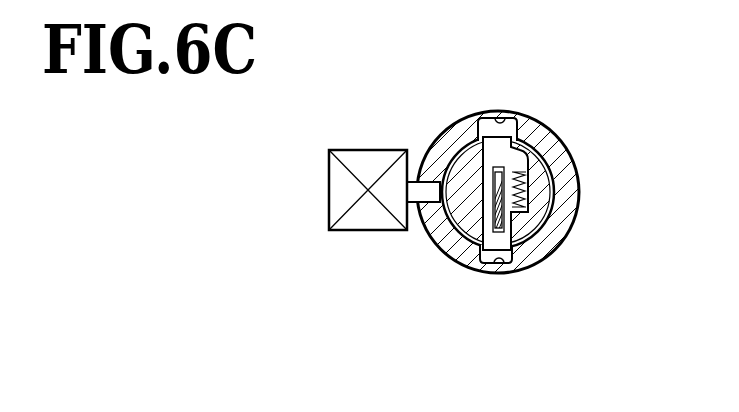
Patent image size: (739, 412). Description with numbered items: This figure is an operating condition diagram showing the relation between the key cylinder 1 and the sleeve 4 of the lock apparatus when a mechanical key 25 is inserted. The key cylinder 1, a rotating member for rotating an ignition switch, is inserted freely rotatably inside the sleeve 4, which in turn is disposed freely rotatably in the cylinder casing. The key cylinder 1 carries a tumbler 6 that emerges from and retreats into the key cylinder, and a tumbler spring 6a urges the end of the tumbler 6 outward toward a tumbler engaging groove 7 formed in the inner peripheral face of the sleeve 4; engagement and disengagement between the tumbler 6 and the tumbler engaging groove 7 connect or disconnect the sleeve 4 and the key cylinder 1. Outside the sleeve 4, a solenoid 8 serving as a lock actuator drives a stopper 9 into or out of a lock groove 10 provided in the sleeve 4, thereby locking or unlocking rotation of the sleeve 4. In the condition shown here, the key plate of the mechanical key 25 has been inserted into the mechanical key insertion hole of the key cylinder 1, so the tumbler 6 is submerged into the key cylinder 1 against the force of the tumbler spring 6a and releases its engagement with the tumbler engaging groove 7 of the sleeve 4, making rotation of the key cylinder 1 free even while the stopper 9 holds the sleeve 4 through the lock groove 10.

The key cylinder 1 is at (455, 232).
The sleeve 4 is at (571, 151).
The tumbler 6 is at (520, 246).
The tumbler spring 6a is at (530, 203).
The tumbler engaging groove 7 is at (507, 119).
The solenoid 8 is at (328, 192).
The stopper 9 is at (418, 180).
The lock groove 10 is at (417, 204).
The mechanical key 25 is at (480, 258).